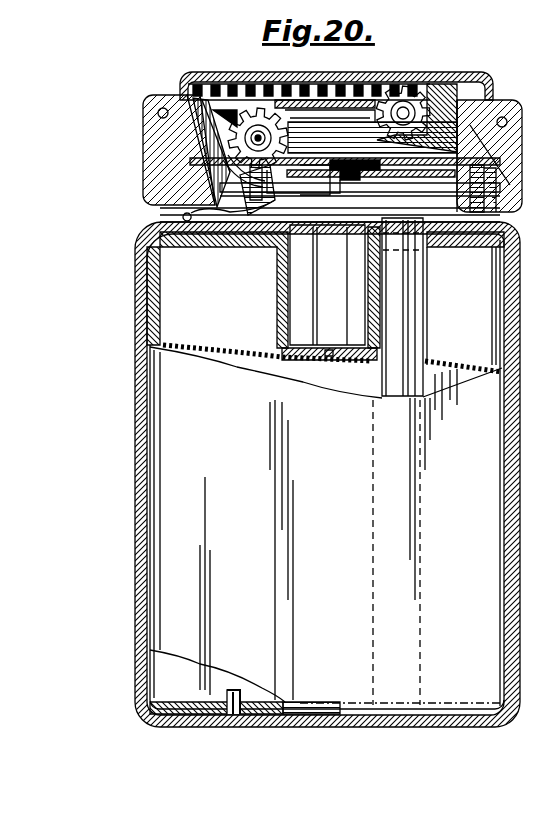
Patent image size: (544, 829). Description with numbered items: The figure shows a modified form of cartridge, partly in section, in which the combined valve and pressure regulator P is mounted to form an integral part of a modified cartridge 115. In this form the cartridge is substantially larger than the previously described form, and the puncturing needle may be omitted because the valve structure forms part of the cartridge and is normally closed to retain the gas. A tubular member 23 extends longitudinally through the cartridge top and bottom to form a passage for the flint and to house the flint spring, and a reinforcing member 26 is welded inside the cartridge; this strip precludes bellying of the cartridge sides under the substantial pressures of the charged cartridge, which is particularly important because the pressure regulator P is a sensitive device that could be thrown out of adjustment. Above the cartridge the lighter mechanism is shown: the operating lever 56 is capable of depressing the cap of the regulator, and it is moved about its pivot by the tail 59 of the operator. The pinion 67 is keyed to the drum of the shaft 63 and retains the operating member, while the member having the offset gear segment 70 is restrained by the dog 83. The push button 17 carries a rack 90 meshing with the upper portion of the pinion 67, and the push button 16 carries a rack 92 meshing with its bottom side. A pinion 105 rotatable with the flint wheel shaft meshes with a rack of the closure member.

The push button 16 is at (497, 108).
The push button 17 is at (150, 126).
The tubular member 23 is at (418, 358).
The reinforcing member 26 is at (250, 372).
The operating lever 56 is at (250, 214).
The tail 59 is at (330, 190).
The shaft 63 is at (250, 142).
The pinion 67 is at (300, 131).
The offset gear segment 70 is at (215, 112).
The dog 83 is at (232, 208).
The rack 90 is at (256, 108).
The rack 92 is at (334, 164).
The pinion 105 is at (405, 88).
The modified cartridge 115 is at (152, 318).
The combined valve and pressure regulator P is at (300, 298).